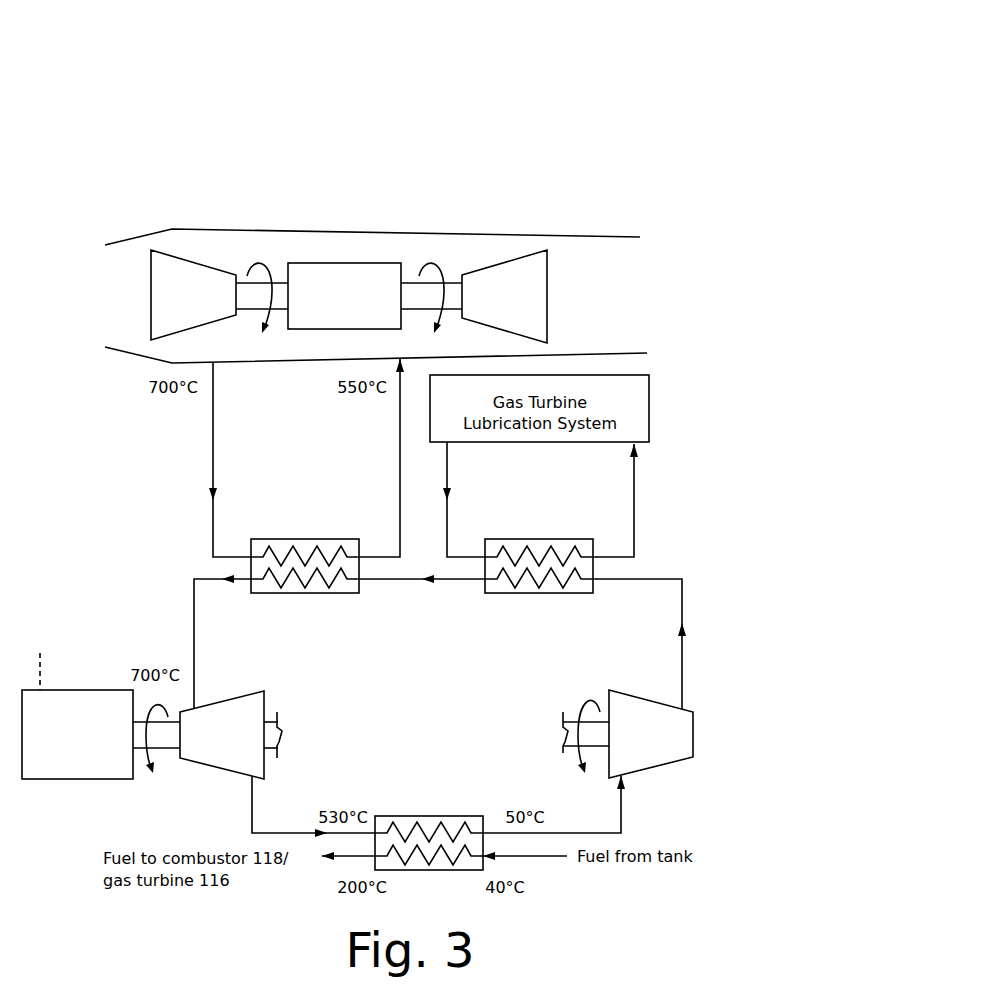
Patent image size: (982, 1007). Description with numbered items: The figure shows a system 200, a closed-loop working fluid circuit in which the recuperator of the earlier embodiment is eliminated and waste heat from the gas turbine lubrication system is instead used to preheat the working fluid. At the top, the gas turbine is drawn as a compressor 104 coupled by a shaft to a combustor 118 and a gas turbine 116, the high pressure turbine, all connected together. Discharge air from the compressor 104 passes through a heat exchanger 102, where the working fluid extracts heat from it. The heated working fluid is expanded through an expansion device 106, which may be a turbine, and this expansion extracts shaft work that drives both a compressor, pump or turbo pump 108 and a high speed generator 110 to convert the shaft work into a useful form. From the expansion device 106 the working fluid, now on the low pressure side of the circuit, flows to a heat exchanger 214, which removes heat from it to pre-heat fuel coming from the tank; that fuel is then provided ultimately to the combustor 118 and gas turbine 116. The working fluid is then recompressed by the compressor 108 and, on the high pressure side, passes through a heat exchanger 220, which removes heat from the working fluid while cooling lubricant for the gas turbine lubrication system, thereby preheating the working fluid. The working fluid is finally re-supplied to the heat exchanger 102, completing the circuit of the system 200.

The system 200 is at (266, 78).
The compressor 104 is at (217, 257).
The combustor 118 is at (375, 253).
The gas turbine 116 is at (510, 249).
The heat exchanger 102 is at (307, 543).
The heat exchanger 220 is at (540, 543).
The heat exchanger 214 is at (433, 819).
The expansion device 106 is at (231, 735).
The compressor, pump or turbo pump 108 is at (675, 743).
The high speed generator 110 is at (101, 716).